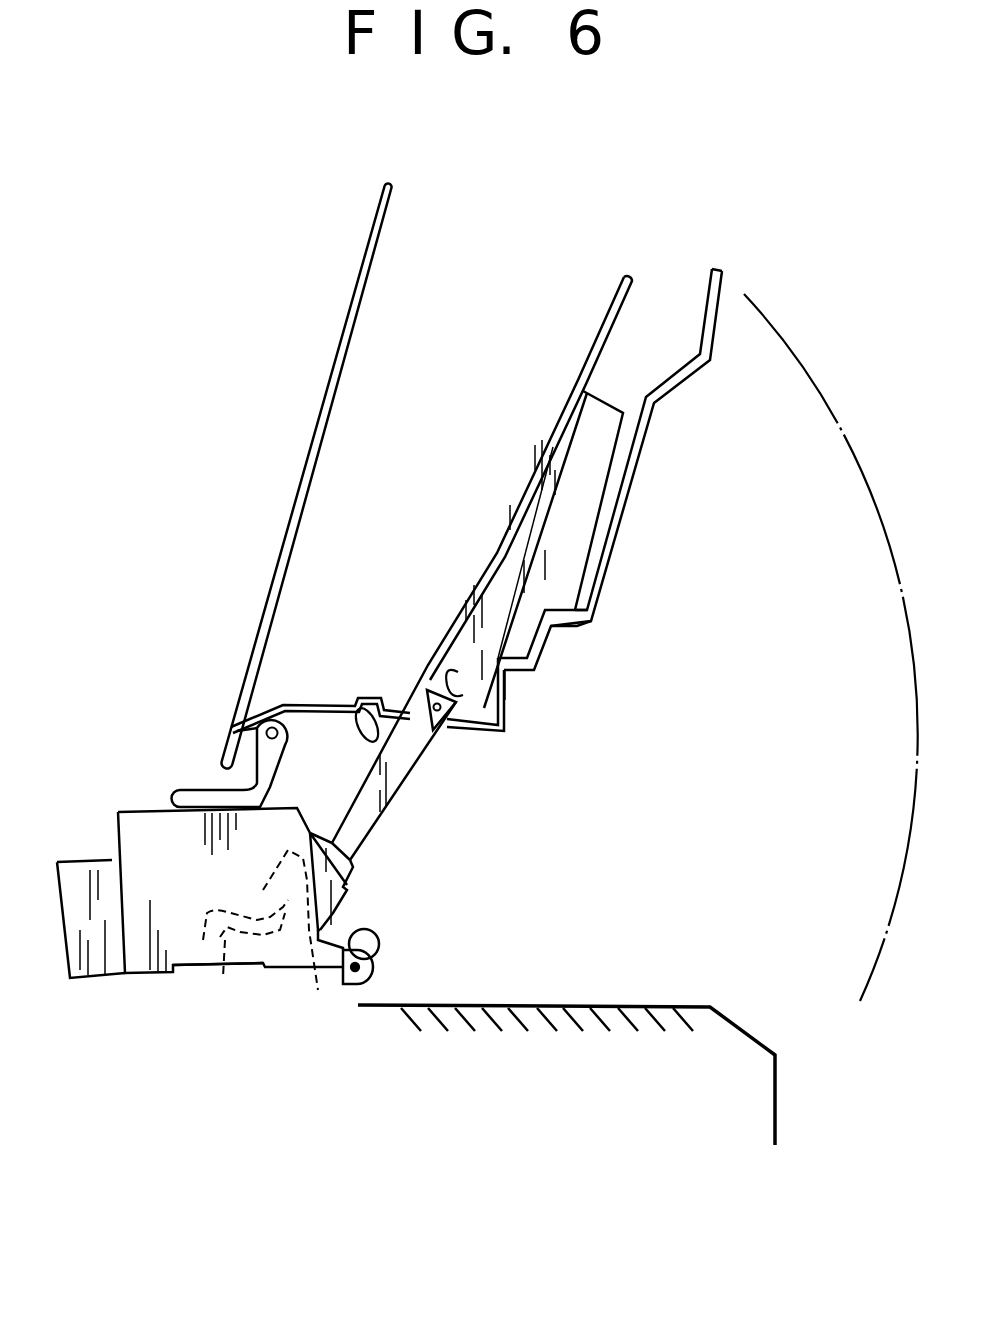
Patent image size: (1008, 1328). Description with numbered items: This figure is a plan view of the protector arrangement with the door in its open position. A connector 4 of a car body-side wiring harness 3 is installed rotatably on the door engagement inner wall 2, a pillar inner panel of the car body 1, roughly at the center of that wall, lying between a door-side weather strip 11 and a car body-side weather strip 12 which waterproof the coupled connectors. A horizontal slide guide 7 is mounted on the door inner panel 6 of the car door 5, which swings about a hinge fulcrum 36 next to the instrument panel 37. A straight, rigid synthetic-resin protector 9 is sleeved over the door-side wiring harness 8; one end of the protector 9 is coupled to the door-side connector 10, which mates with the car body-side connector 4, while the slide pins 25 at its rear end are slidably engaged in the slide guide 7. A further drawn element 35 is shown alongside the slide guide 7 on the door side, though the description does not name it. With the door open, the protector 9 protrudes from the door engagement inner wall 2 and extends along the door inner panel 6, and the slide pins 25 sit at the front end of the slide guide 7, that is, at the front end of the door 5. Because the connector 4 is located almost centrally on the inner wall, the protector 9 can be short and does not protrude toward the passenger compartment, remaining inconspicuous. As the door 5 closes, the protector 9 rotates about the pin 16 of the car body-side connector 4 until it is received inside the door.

The car body 1 is at (263, 967).
The door engagement inner wall 2 is at (282, 813).
The car body-side wiring harness 3 is at (227, 967).
The car body-side connector 4 is at (340, 910).
The car door 5 is at (326, 362).
The door inner panel 6 is at (633, 296).
The slide guide 7 is at (517, 543).
The door-side wiring harness 8 is at (453, 683).
The protector 9 is at (393, 800).
The door-side connector 10 is at (353, 870).
The door-side weather strip 11 is at (382, 707).
The car body-side weather strip 12 is at (380, 952).
The pin 16 is at (313, 970).
The slide pins 25 is at (440, 724).
The guide rod 35 is at (630, 470).
The hinge fulcrum 36 is at (305, 707).
The instrument panel 37 is at (777, 1113).